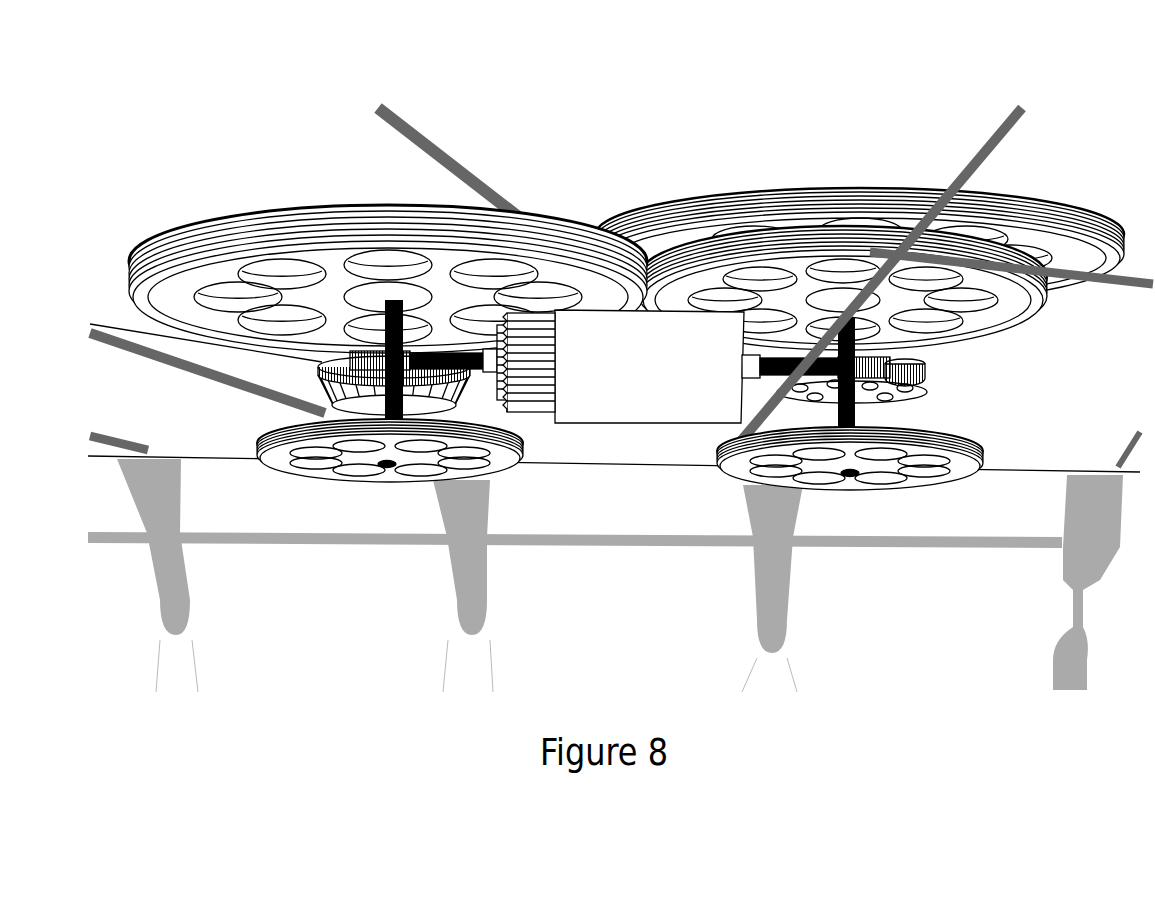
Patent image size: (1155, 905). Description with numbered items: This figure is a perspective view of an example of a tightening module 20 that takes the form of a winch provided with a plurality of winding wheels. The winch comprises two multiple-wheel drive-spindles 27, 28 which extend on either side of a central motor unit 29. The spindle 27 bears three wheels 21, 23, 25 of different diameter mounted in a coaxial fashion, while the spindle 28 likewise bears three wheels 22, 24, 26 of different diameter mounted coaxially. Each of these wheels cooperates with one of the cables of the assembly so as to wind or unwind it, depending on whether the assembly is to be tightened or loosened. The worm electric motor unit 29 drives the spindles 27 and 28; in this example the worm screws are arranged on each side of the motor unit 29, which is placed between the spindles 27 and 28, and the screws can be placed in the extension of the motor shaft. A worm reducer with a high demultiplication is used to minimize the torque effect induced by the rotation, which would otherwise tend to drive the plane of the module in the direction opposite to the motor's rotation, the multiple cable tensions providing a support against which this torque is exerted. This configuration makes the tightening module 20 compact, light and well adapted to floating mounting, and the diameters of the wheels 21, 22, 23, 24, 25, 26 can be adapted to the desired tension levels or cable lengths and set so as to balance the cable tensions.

The tightening module 20 is at (581, 172).
The wheel 21 is at (893, 444).
The wheel 22 is at (397, 432).
The wheel 23 is at (844, 210).
The wheel 24 is at (391, 206).
The wheel 25 is at (1025, 313).
The wheel 26 is at (220, 258).
The multiple-wheel drive-spindle 27 is at (762, 377).
The multiple-wheel drive-spindle 28 is at (447, 361).
The motor 29 is at (650, 384).